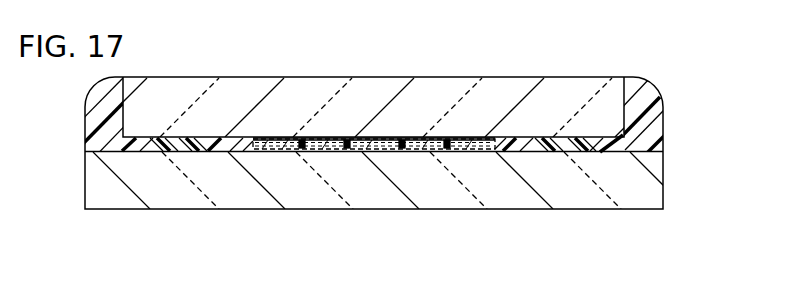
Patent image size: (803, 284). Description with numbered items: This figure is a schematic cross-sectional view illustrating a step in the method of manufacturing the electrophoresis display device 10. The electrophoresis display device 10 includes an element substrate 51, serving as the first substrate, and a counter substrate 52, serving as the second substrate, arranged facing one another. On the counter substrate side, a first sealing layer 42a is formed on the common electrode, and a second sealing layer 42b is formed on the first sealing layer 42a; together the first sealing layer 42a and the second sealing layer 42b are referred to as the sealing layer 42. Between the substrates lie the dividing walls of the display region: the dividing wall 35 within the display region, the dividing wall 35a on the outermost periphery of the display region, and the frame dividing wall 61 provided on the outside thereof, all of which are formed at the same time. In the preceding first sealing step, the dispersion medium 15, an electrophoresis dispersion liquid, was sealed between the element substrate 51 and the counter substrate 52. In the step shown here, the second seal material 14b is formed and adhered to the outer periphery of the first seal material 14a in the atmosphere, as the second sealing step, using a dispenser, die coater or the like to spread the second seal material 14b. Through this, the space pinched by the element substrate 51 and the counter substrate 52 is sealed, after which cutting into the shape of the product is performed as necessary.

The electrophoresis display device 10 is at (634, 57).
The sealing layer 42 is at (560, 34).
The first sealing layer 42a is at (478, 139).
The second sealing layer 42b is at (487, 139).
The counter substrate 52 is at (666, 97).
The element substrate 51 is at (667, 178).
The dispersion medium 15 is at (357, 140).
The dividing wall 35 is at (402, 146).
The dividing wall on the outermost periphery 35a is at (301, 147).
The frame dividing wall 61 is at (248, 140).
The first seal material 14a is at (180, 152).
The second seal material 14b is at (108, 152).